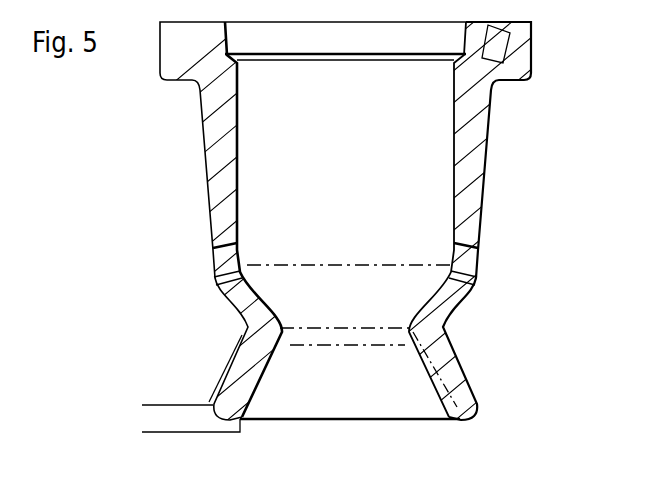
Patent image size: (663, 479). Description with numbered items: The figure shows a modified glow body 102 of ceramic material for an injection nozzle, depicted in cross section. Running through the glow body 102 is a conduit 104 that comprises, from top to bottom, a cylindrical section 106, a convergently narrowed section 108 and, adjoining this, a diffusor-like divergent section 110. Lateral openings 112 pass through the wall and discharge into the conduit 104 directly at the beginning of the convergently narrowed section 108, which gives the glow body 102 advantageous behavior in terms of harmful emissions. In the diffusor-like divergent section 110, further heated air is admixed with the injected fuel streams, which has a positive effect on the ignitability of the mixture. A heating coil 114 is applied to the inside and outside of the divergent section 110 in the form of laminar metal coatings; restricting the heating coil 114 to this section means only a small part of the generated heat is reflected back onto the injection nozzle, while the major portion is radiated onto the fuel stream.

The glow body 102 is at (208, 137).
The conduit 104 is at (356, 180).
The cylindrical section 106 is at (238, 102).
The convergently narrowed section 108 is at (262, 296).
The diffusor-like divergent section 110 is at (257, 385).
The lateral openings 112 is at (212, 257).
The heating coil 114 is at (240, 353).